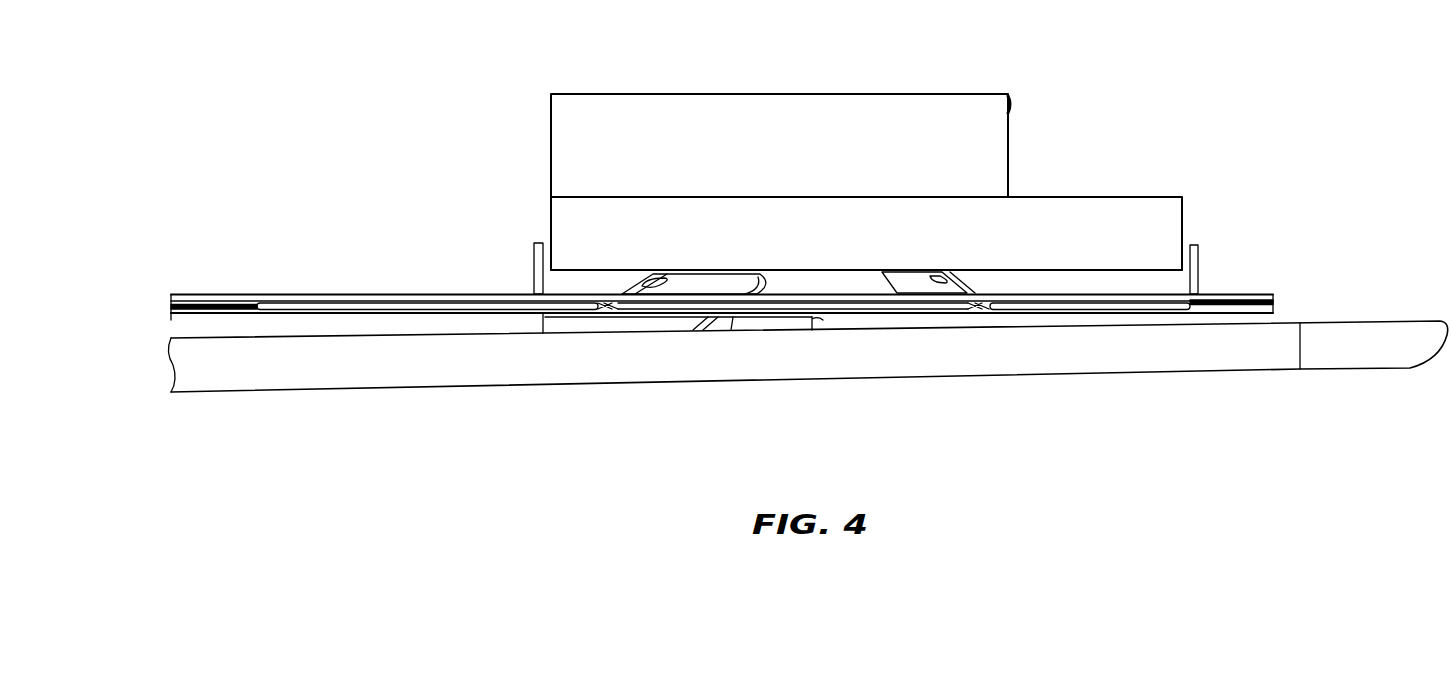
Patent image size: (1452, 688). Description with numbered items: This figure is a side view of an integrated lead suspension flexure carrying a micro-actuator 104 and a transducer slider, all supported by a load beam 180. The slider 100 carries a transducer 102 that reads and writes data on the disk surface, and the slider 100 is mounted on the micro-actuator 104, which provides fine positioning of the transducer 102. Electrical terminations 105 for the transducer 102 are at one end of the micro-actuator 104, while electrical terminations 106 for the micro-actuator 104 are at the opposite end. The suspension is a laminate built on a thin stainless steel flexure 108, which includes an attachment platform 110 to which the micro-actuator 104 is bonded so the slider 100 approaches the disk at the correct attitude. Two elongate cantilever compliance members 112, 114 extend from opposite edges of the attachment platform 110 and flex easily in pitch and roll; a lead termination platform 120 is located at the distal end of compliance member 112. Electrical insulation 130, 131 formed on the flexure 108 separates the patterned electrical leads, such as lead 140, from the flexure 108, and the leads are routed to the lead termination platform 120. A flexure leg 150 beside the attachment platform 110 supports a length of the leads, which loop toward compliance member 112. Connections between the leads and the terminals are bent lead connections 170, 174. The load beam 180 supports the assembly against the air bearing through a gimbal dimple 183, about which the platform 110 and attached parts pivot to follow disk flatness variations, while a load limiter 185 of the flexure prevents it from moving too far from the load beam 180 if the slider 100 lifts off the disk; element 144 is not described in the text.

The slider 100 is at (879, 94).
The transducer 102 is at (1010, 103).
The micro-actuator 104 is at (1124, 197).
The electrical terminations 105 is at (1183, 245).
The electrical terminations 106 is at (550, 252).
The flexure 108 is at (183, 316).
The attachment platform 110 is at (822, 270).
The cantilever compliance member 112 is at (945, 272).
The cantilever compliance member 114 is at (661, 282).
The lead termination platform 120 is at (1276, 310).
The electrical insulation 130 is at (218, 294).
The electrical insulation 131 is at (543, 333).
The electrical lead 140 is at (328, 294).
The conductive trace 144 is at (1275, 298).
The flexure leg 150 is at (1083, 314).
The bent lead connection 170 is at (1199, 259).
The bent lead connection 174 is at (533, 263).
The load beam 180 is at (297, 390).
The gimbal dimple 183 is at (832, 330).
The load limiter 185 is at (716, 330).